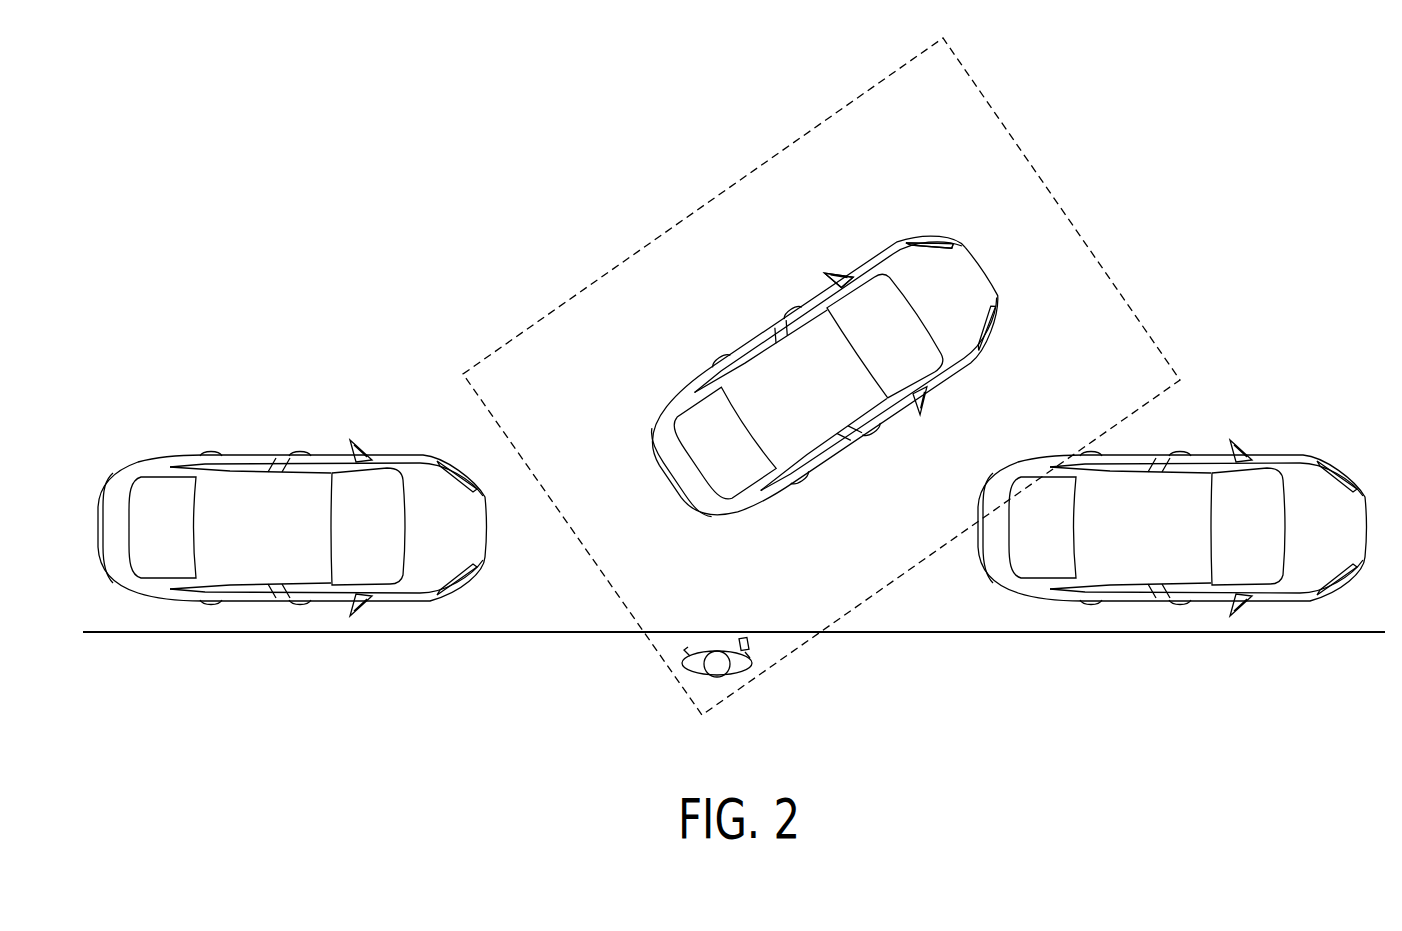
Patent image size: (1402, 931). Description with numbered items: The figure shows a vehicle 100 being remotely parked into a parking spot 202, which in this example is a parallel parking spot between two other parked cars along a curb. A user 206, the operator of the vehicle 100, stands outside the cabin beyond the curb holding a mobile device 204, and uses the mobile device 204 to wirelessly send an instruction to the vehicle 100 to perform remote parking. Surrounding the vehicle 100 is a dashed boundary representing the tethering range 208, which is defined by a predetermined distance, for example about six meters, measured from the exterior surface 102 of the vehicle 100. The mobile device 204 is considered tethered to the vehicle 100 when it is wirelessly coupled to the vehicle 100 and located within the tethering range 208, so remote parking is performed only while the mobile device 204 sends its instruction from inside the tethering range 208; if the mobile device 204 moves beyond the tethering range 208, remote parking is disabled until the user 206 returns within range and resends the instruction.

The vehicle 100 is at (980, 263).
The exterior surface 102 is at (883, 246).
The parking spot 202 is at (752, 581).
The mobile device 204 is at (750, 641).
The user 206 is at (697, 677).
The tethering range 208 is at (1025, 153).